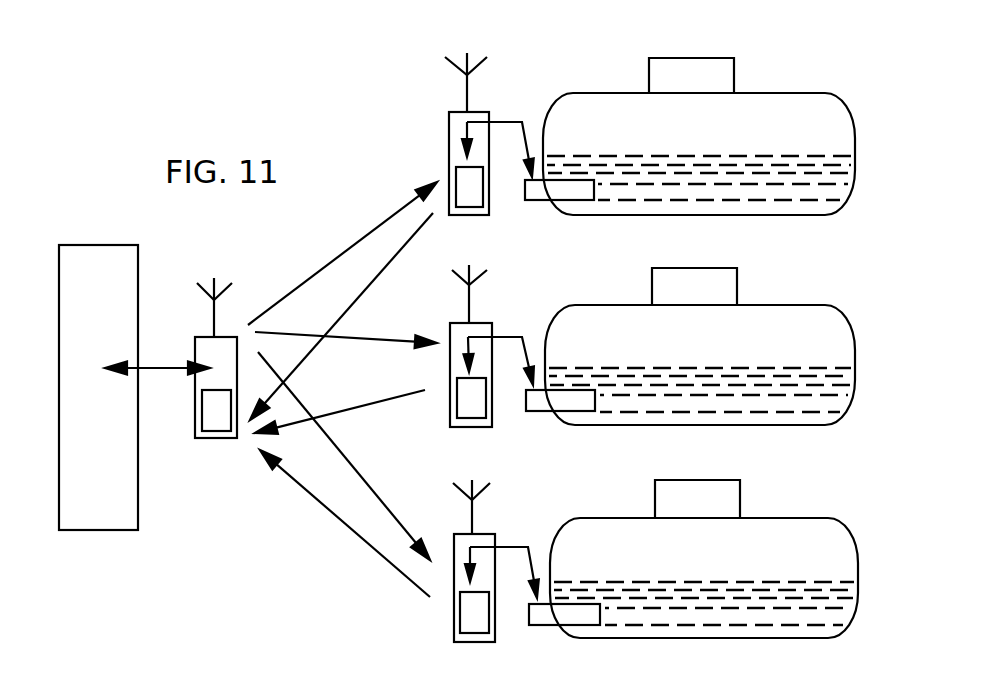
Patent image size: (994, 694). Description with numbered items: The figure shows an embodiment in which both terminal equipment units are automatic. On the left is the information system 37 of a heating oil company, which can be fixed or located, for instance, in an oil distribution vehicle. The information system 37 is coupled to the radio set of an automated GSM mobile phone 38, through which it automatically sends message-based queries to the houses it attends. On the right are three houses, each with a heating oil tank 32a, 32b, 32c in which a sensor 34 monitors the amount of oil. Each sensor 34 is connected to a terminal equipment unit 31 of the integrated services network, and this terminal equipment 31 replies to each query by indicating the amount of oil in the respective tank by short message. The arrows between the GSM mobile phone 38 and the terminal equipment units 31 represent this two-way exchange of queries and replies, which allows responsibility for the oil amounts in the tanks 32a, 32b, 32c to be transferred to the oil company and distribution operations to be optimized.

The terminal equipment unit 31 is at (447, 110).
The oil tank 32a is at (773, 118).
The oil tank 32b is at (780, 327).
The oil tank 32c is at (782, 537).
The sensor 34 is at (547, 203).
The information system 37 is at (73, 532).
The automated GSM mobile phone 38 is at (215, 437).